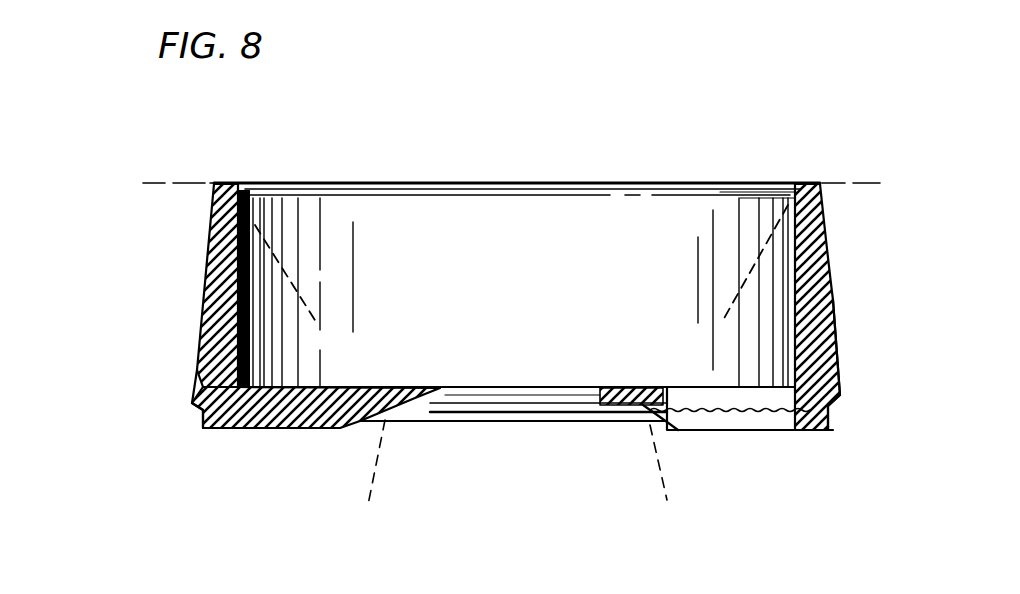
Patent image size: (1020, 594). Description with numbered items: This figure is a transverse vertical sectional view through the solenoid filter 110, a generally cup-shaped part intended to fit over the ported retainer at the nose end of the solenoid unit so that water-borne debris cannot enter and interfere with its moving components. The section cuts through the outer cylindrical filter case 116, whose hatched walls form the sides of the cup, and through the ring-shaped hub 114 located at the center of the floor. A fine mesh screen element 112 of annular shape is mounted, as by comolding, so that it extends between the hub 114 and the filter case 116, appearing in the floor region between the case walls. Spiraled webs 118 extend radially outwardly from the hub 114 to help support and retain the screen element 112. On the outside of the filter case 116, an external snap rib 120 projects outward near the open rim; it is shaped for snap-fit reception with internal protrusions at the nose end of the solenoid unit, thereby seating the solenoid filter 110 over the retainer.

The solenoid filter 110 is at (481, 292).
The screen element 112 is at (747, 415).
The hub 114 is at (384, 387).
The filter case 116 is at (818, 243).
The spiraled webs 118 is at (275, 430).
The snap rib 120 is at (197, 405).